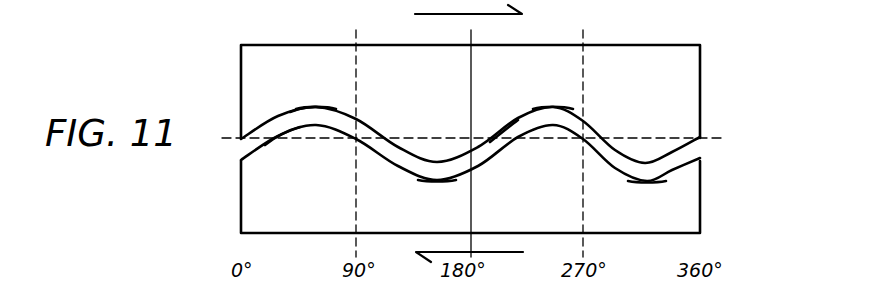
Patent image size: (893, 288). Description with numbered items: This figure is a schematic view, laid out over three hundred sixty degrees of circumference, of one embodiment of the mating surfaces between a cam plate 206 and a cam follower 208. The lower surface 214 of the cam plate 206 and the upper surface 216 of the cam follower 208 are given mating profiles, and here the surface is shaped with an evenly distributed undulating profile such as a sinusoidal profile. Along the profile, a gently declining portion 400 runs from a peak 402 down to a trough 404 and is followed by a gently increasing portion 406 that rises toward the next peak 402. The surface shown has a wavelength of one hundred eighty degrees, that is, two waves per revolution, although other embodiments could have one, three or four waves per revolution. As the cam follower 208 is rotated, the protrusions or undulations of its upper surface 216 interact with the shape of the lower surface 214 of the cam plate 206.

The cam plate 206 is at (673, 93).
The cam follower 208 is at (669, 200).
The lower surface of the cam plate 214 is at (312, 107).
The upper surface of the cam follower 216 is at (283, 133).
The gently declining portion 400 is at (407, 152).
The peak 402 is at (320, 125).
The trough 404 is at (438, 180).
The gently increasing portion 406 is at (505, 126).